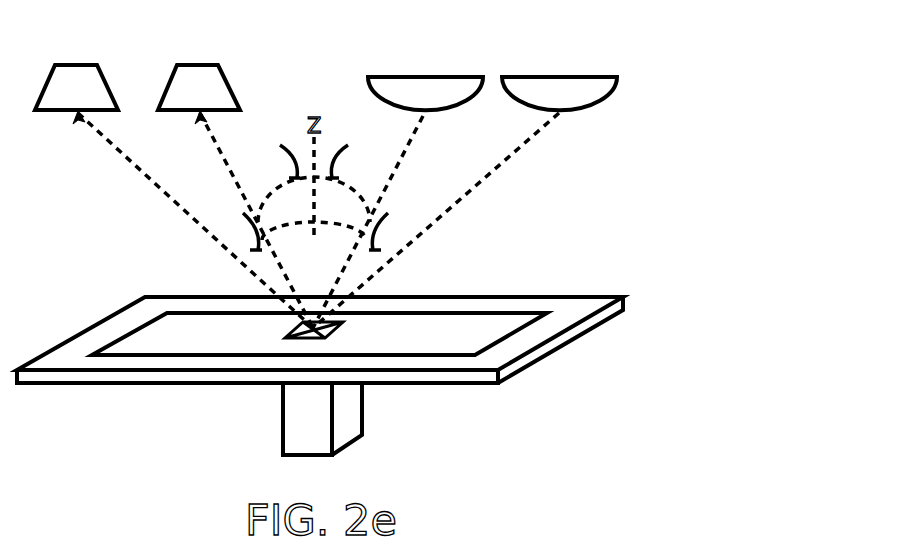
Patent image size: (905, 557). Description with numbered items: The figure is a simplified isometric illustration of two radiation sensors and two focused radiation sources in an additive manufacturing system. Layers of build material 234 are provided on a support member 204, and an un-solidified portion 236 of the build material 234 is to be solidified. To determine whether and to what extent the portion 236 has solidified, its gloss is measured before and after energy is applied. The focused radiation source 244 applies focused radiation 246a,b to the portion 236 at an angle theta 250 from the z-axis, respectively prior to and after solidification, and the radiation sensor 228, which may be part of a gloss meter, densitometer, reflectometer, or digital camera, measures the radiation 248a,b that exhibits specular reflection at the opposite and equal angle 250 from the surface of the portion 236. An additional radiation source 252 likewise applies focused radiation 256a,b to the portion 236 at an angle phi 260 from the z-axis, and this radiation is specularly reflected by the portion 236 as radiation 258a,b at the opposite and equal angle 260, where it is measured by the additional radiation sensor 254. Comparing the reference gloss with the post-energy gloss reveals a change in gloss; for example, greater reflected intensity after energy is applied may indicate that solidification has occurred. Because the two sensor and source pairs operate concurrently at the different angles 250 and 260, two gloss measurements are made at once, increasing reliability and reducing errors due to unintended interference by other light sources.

The support member 204 is at (448, 295).
The build material 234 is at (180, 312).
The portion of the build material 236 is at (332, 338).
The radiation sensor 254 is at (92, 63).
The radiation sensor 228 is at (215, 63).
The focused radiation source 244 is at (403, 73).
The radiation source 252 is at (537, 73).
The radiation 258a,b is at (112, 142).
The radiation 248a,b is at (207, 128).
The focused radiation 246a,b is at (423, 120).
The focused radiation 256a,b is at (530, 137).
The angle (θ) 250 is at (318, 171).
The angle (φ) 260 is at (316, 227).